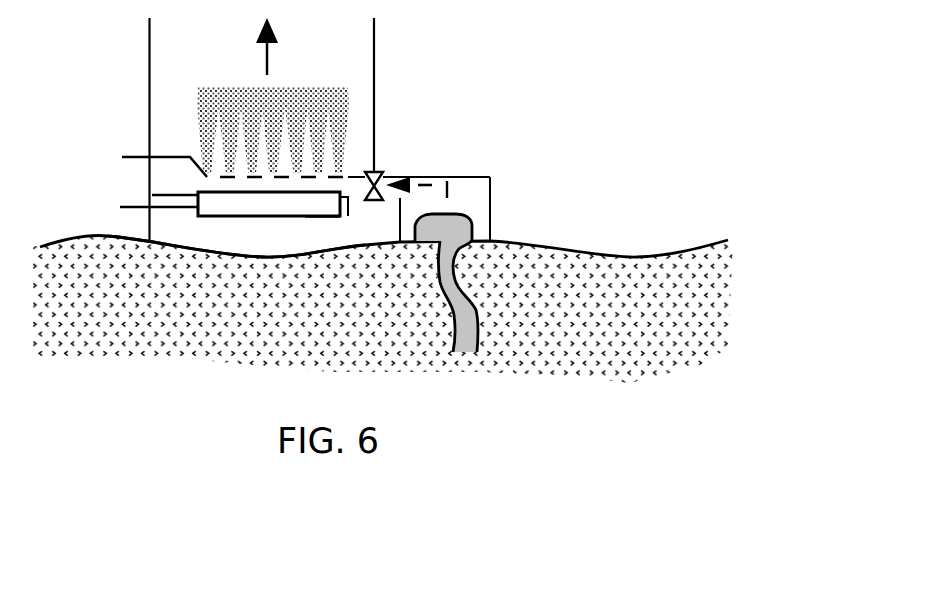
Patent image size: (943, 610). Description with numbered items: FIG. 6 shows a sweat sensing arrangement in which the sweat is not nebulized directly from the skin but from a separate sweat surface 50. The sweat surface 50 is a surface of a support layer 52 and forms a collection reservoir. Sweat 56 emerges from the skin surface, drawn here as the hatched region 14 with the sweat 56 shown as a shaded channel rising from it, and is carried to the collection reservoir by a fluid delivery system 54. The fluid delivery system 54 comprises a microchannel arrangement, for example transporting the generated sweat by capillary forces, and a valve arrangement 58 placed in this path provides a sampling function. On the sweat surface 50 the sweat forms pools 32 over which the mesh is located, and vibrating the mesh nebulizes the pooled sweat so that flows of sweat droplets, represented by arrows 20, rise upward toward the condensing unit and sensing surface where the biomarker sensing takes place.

The ground / soil 14 is at (288, 325).
The sweat droplet flows 20 is at (212, 109).
The sweat pools 32 is at (270, 203).
The sweat surface 50 is at (305, 217).
The support layer 52 is at (270, 242).
The fluid delivery system 54 is at (447, 189).
The sweat 56 is at (463, 231).
The valve arrangement 58 is at (468, 166).